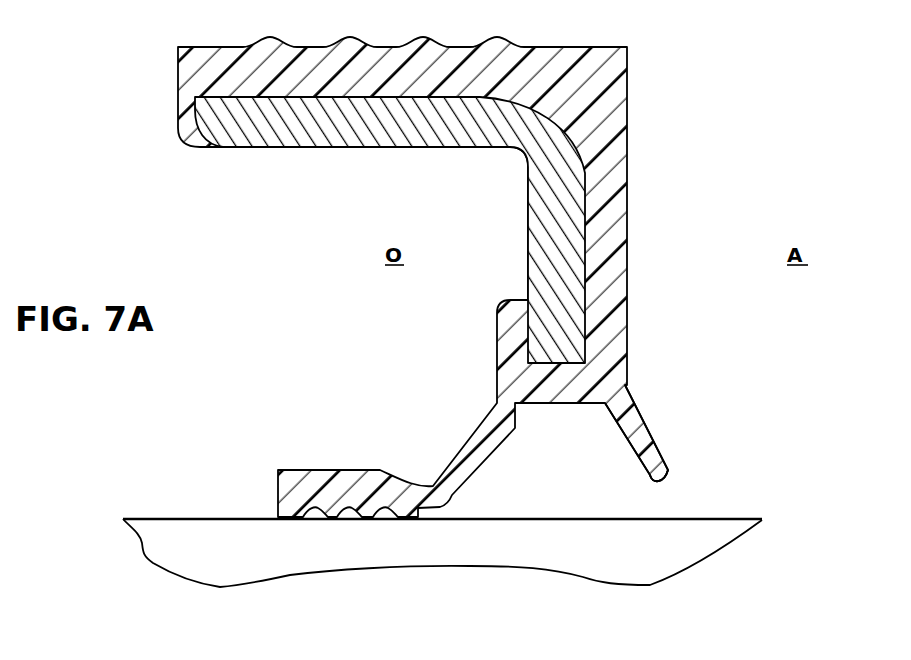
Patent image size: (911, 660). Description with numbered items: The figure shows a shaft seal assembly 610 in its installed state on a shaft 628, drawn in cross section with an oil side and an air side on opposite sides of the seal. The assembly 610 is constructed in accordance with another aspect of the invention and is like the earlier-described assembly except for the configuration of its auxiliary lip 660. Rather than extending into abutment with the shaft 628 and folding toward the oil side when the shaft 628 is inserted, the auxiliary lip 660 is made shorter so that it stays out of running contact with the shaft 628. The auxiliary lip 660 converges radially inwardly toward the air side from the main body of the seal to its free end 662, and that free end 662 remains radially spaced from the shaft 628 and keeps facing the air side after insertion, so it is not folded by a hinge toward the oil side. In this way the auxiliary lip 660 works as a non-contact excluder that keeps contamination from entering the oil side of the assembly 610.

The shaft seal assembly 610 is at (717, 167).
The auxiliary lip 660 is at (680, 425).
The free end 662 is at (668, 480).
The shaft 628 is at (212, 519).